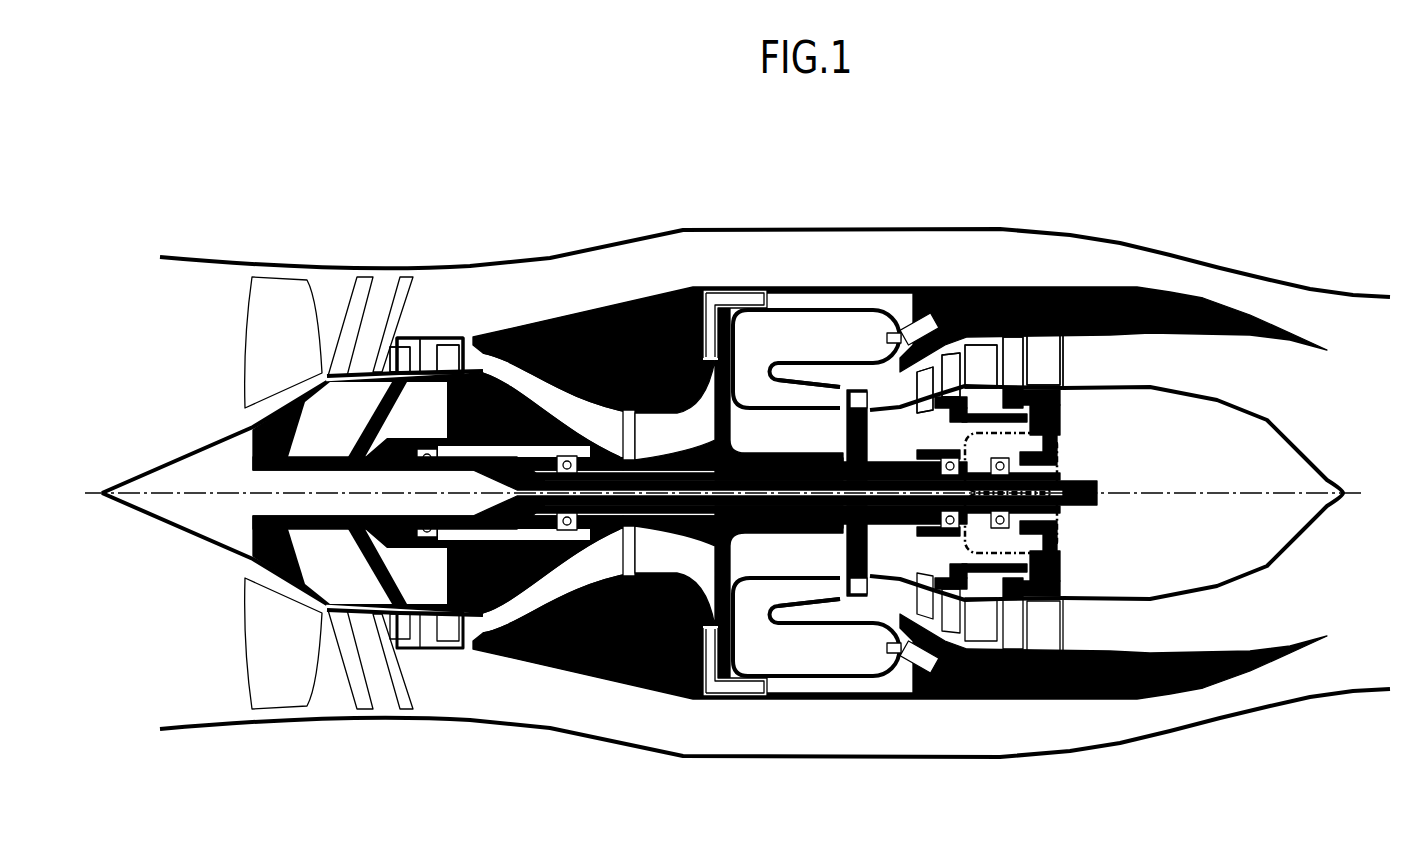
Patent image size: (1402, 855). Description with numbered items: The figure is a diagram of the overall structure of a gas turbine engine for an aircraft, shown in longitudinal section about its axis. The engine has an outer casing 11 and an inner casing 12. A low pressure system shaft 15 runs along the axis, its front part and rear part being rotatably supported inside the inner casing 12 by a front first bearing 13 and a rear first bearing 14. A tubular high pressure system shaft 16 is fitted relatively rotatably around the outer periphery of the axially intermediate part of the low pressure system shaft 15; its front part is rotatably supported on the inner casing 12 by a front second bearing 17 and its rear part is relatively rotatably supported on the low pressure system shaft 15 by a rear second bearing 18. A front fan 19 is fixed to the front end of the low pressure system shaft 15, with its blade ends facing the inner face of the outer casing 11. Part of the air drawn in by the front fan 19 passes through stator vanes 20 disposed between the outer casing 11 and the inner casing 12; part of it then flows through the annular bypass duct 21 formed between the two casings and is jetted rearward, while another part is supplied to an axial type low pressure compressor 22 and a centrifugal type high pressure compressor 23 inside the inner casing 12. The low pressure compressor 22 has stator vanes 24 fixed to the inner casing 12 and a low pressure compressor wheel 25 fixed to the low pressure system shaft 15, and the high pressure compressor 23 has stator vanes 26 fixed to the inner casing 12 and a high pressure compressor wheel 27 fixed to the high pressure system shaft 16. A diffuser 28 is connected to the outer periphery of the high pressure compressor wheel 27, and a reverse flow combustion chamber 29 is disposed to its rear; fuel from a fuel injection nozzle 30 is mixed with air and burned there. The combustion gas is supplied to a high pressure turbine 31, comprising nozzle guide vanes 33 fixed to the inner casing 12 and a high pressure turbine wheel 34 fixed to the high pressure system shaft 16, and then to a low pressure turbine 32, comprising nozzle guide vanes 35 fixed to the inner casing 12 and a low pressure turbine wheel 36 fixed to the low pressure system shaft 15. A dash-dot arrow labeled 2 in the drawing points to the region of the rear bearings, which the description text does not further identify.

The bearing assembly 2 is at (1063, 469).
The outer casing 11 is at (470, 264).
The inner casing 12 is at (585, 312).
The front first bearing 13 is at (438, 456).
The rear first bearing 14 is at (1003, 462).
The low pressure system shaft 15 is at (746, 486).
The high pressure system shaft 16 is at (783, 470).
The front second bearing 17 is at (568, 458).
The rear second bearing 18 is at (950, 460).
The front fan 19 is at (262, 318).
The stator vanes 20 is at (365, 337).
The annular bypass duct 21 is at (813, 276).
The axial type low pressure compressor 22 is at (452, 326).
The centrifugal type high pressure compressor 23 is at (637, 411).
The stator vanes 24 is at (446, 355).
The low pressure compressor wheel 25 is at (413, 387).
The stator vanes 26 is at (553, 417).
The high pressure compressor wheel 27 is at (707, 437).
The diffuser 28 is at (738, 293).
The reverse flow combustion chamber 29 is at (804, 347).
The fuel injection nozzle 30 is at (919, 316).
The high pressure turbine 31 is at (850, 381).
The low pressure turbine 32 is at (1030, 333).
The nozzle guide vanes 33 is at (817, 390).
The high pressure turbine wheel 34 is at (860, 437).
The nozzle guide vanes 35 is at (984, 350).
The low pressure turbine wheel 36 is at (965, 407).